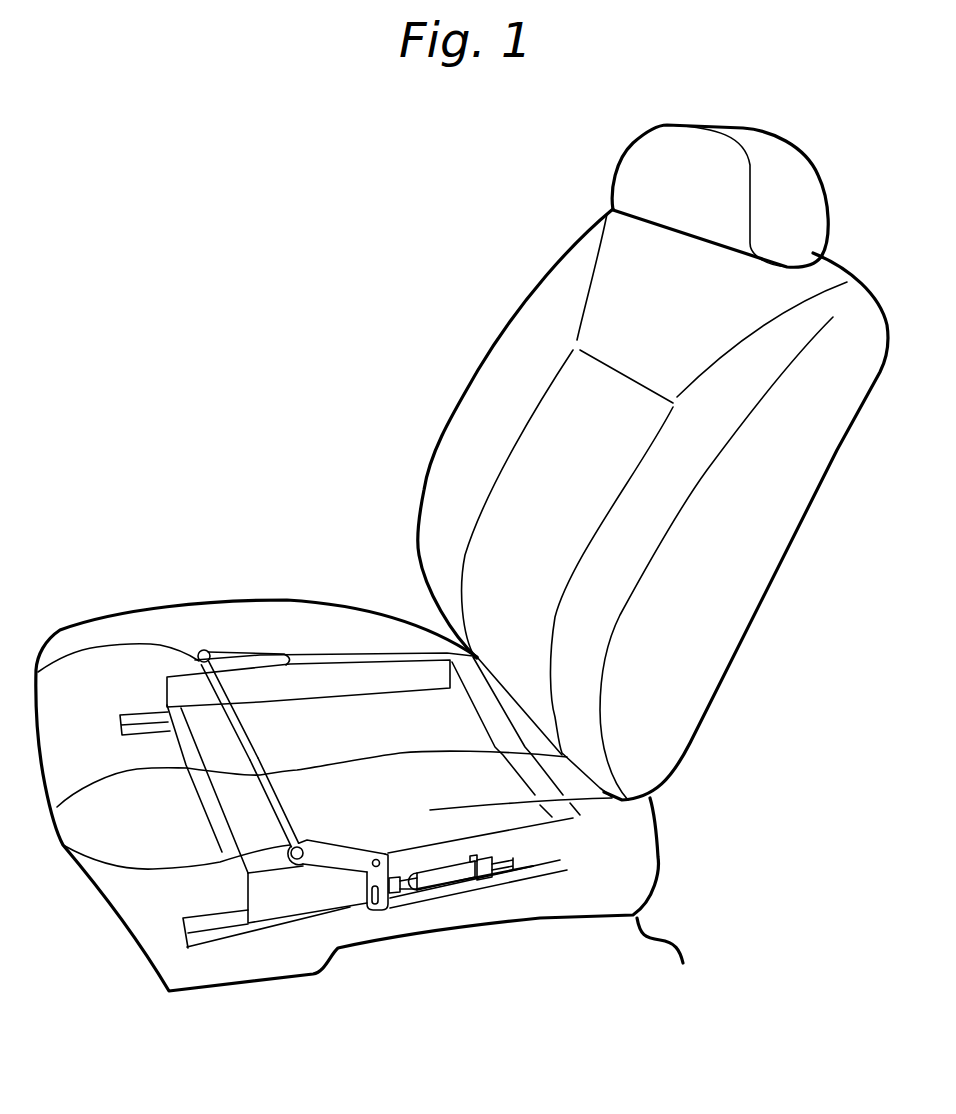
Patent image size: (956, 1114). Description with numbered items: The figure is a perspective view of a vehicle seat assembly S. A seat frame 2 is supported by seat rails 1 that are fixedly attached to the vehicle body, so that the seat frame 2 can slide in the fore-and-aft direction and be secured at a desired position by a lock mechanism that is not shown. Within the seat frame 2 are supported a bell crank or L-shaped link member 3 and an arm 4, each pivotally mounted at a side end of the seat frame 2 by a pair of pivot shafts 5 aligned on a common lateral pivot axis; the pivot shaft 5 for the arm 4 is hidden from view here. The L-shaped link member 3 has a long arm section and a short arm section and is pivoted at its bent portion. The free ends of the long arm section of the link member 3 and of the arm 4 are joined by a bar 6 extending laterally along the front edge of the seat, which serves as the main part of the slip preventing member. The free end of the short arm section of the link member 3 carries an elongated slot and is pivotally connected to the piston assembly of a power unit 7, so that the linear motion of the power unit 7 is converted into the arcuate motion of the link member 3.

The vehicle seat assembly S is at (360, 600).
The seat rails 1 is at (130, 716).
The seat frame 2 is at (540, 864).
The L-shaped link member 3 is at (334, 870).
The arm 4 is at (222, 652).
The pivot shafts 5 is at (380, 858).
The bar 6 is at (273, 790).
The power unit 7 is at (434, 887).